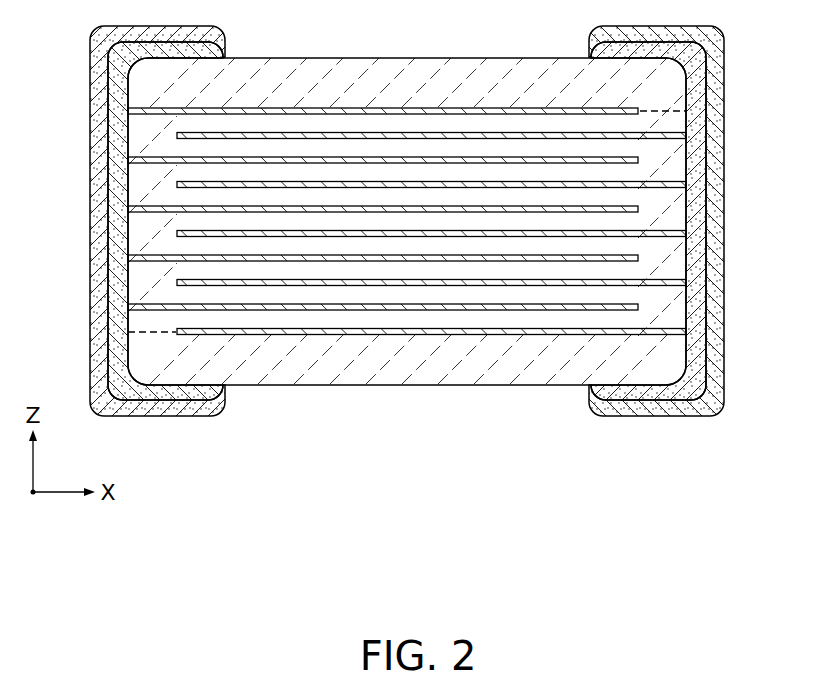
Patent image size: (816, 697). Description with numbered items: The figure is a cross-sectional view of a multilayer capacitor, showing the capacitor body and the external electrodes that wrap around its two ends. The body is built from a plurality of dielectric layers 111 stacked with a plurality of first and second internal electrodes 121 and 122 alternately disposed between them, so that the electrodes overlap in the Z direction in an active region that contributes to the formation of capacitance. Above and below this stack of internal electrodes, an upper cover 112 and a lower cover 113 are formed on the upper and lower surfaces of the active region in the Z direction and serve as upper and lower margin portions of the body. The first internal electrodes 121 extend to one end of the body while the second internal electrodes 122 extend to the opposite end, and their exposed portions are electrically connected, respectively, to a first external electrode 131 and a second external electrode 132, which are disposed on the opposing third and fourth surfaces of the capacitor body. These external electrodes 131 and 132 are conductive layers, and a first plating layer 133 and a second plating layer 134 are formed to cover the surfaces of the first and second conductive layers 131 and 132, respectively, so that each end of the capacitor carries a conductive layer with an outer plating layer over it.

The dielectric layers 111 is at (637, 173).
The upper cover 112 is at (313, 92).
The lower cover 113 is at (340, 362).
The first internal electrodes 121 is at (393, 107).
The second internal electrodes 122 is at (445, 132).
The first external electrode 131 is at (180, 393).
The second external electrode 132 is at (633, 391).
The first plating layer 133 is at (128, 408).
The second plating layer 134 is at (687, 412).